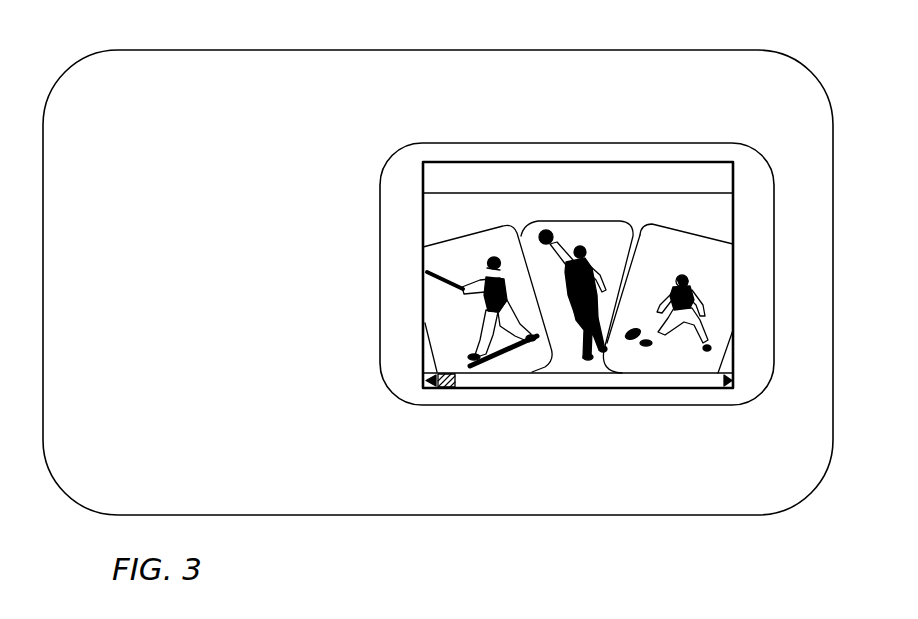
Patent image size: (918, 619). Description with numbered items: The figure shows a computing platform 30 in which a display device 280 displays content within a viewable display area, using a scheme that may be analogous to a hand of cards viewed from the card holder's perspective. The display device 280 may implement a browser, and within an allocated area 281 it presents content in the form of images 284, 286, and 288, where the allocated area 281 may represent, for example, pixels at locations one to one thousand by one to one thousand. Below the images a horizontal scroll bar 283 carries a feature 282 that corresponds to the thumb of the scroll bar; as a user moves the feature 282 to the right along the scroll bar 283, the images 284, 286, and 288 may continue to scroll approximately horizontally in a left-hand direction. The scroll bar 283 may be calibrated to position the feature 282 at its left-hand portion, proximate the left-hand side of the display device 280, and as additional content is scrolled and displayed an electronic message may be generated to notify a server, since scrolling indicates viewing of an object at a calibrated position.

The computing platform 30 is at (113, 38).
The display device 280 is at (383, 383).
The allocated area 281 is at (735, 195).
The feature 282 is at (450, 388).
The horizontal scroll bar 283 is at (487, 383).
The image 284 is at (515, 360).
The image 286 is at (577, 360).
The image 288 is at (675, 360).